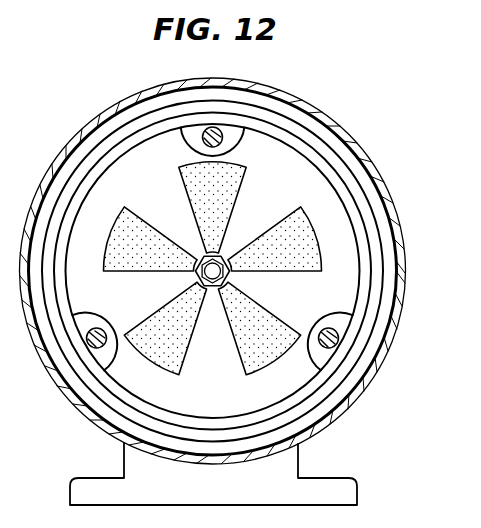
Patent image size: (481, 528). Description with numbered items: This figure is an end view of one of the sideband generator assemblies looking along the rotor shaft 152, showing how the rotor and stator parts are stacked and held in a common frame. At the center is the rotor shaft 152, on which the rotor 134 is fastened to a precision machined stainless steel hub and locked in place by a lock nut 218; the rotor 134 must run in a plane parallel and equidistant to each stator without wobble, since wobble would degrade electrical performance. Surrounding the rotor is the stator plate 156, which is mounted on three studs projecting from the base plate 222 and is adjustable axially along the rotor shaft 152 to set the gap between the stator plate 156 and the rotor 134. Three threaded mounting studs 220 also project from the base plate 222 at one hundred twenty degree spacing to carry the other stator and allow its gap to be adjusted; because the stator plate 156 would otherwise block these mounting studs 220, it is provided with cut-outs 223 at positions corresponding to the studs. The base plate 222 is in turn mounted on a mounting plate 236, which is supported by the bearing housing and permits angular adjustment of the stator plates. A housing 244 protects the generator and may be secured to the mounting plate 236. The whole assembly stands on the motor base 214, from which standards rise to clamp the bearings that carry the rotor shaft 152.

The rotor 134 is at (338, 136).
The rotor shaft 152 is at (216, 268).
The stator plate 156 is at (336, 224).
The motor base 214 is at (137, 467).
The lock nut 218 is at (317, 163).
The mounting studs 220 is at (219, 128).
The base plate 222 is at (133, 138).
The cut-outs 223 is at (183, 158).
The mounting plate 236 is at (98, 150).
The housing 244 is at (36, 194).